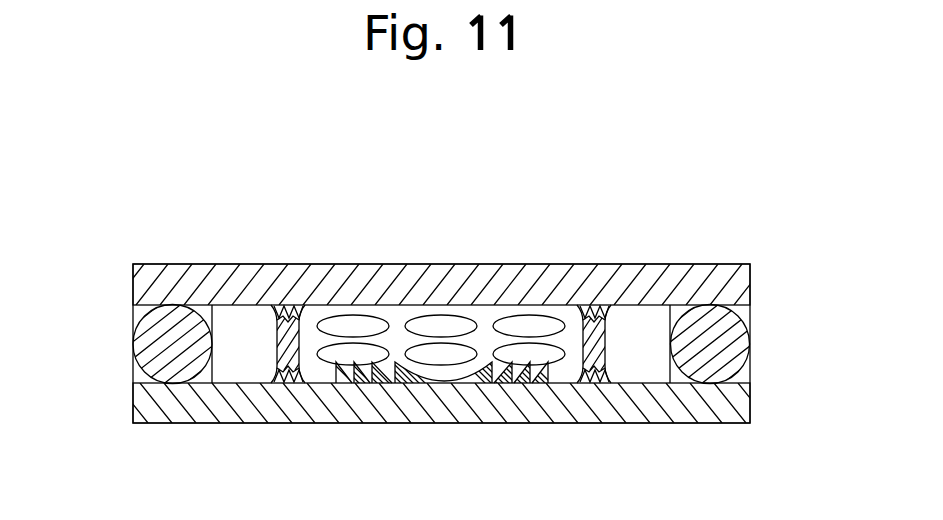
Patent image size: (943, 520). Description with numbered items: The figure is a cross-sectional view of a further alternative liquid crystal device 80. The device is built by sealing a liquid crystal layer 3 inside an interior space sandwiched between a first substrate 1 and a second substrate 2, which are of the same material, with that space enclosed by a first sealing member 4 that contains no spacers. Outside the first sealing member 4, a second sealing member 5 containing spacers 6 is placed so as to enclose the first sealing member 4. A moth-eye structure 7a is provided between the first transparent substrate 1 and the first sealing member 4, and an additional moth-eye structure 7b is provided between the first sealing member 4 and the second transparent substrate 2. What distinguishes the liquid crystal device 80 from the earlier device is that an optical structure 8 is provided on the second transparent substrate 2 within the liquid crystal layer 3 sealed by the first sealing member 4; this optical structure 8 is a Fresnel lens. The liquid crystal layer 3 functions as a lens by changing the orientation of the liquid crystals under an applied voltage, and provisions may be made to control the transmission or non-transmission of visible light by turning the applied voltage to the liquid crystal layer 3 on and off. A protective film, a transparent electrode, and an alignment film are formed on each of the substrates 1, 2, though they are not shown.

The liquid crystal device 80 is at (640, 197).
The first substrate 1 is at (206, 283).
The second substrate 2 is at (203, 411).
The liquid crystal layer 3 is at (402, 340).
The first sealing member 4 is at (277, 345).
The second sealing member 5 is at (142, 378).
The spacers 6 is at (143, 338).
The moth-eye structure 7a is at (289, 305).
The moth-eye structure 7b is at (288, 387).
The optical structure 8 is at (472, 383).